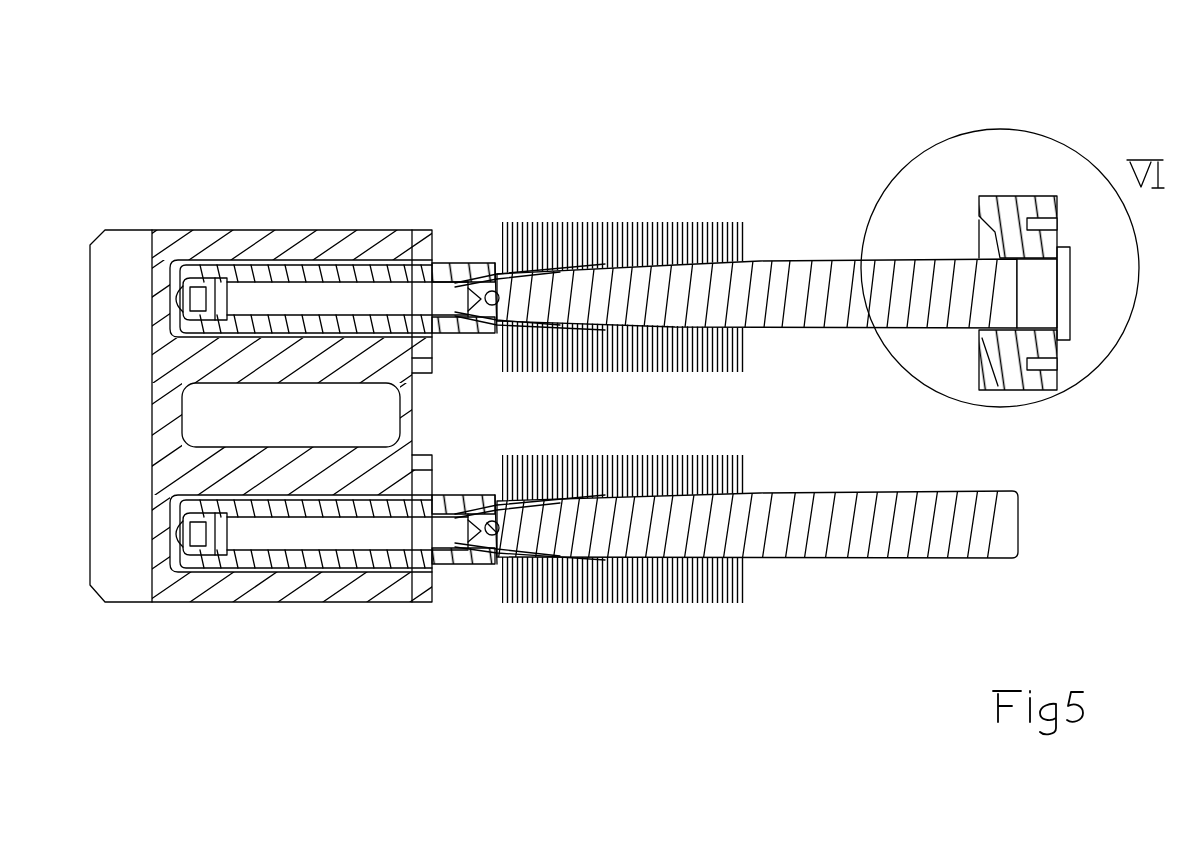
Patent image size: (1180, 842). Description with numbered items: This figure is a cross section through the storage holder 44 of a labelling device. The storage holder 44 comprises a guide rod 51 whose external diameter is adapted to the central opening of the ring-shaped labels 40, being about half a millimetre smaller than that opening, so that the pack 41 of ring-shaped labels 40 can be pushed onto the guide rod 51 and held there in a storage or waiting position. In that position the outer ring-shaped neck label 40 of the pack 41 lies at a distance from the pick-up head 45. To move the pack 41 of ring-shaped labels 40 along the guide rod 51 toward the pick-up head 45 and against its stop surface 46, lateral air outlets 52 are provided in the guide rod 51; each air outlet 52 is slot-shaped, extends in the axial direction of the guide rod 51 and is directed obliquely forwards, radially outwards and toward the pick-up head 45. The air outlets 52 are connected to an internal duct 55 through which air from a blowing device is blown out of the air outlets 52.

The ring-shaped labels 40 is at (638, 233).
The pack of ring-shaped labels 41 is at (694, 216).
The storage holder 44 is at (778, 186).
The pick-up head 45 is at (1016, 182).
The stop surface 46 is at (975, 352).
The guide rod 51 is at (791, 275).
The air outlets 52 is at (532, 272).
The internal duct 55 is at (448, 297).